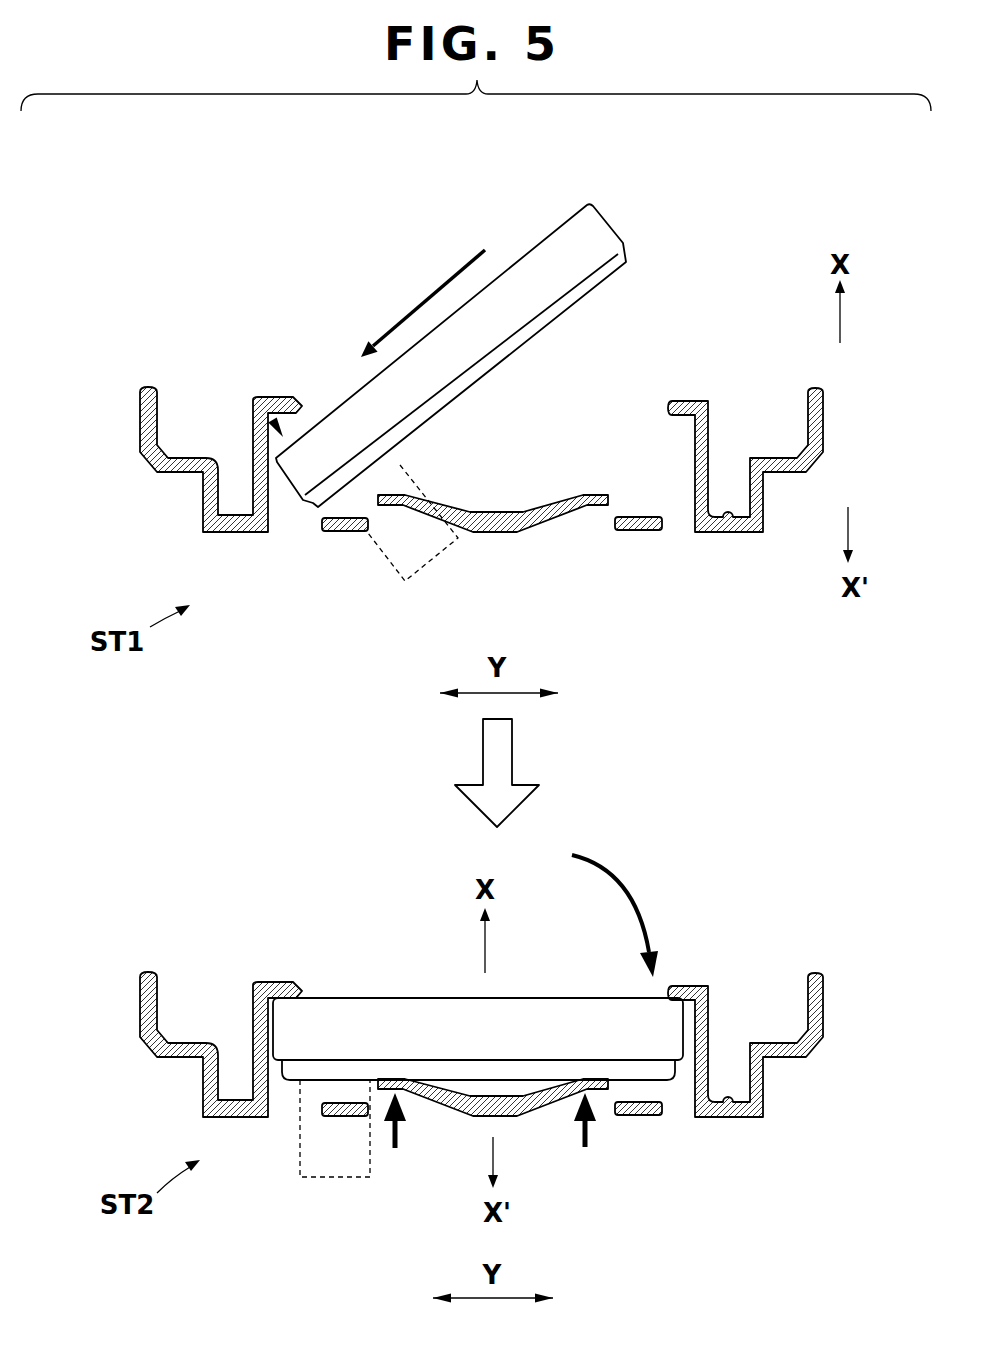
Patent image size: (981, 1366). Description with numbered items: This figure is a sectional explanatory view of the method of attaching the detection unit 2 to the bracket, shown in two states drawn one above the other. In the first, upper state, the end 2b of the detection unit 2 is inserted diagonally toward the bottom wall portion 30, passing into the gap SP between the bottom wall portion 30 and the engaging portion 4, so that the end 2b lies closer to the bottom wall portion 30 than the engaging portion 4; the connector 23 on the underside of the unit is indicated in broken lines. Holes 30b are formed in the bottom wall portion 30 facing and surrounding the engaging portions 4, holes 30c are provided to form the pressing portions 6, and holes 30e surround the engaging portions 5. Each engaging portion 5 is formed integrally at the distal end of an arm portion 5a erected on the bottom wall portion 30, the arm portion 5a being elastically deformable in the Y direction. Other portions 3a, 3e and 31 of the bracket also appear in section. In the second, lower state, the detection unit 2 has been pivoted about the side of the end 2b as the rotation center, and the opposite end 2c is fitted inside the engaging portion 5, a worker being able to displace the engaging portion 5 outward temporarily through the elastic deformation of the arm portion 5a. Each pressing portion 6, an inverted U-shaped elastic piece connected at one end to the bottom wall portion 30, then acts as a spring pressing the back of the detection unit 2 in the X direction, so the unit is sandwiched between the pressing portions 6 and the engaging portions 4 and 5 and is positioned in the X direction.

The detection unit 2 is at (548, 225).
The end 2b is at (310, 505).
The end 2c is at (607, 220).
The side wall of holder 3a is at (145, 385).
The receiving portion of holder 3e is at (625, 405).
The engaging portion 4 is at (287, 392).
The engaging portion 5 is at (700, 399).
The arm portion 5a is at (710, 422).
The pressing portion 6 is at (408, 495).
The connector 23 is at (442, 560).
The bottom wall portion 30 is at (338, 533).
The hole 30b is at (285, 528).
The hole 30c is at (375, 520).
The hole 30e is at (688, 530).
The inner wall of holder 31 is at (253, 412).
The gap SP is at (268, 395).